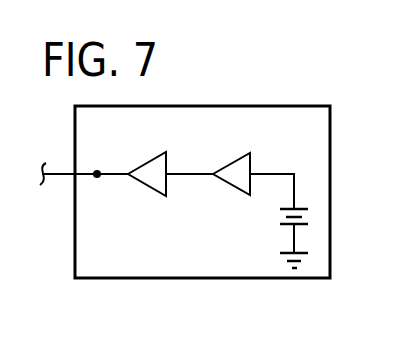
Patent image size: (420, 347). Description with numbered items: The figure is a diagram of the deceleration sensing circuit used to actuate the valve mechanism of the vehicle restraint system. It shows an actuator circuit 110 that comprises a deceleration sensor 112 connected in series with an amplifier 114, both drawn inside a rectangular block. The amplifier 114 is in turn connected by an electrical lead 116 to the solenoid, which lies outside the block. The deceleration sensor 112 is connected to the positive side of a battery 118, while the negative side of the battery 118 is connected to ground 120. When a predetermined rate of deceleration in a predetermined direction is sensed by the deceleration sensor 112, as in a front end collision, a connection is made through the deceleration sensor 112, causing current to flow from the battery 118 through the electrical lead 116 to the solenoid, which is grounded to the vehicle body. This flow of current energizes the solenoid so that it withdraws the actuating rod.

The actuator circuit 110 is at (269, 100).
The deceleration sensor 112 is at (232, 186).
The amplifier 114 is at (147, 186).
The electrical lead 116 is at (60, 177).
The battery 118 is at (303, 209).
The ground 120 is at (303, 253).